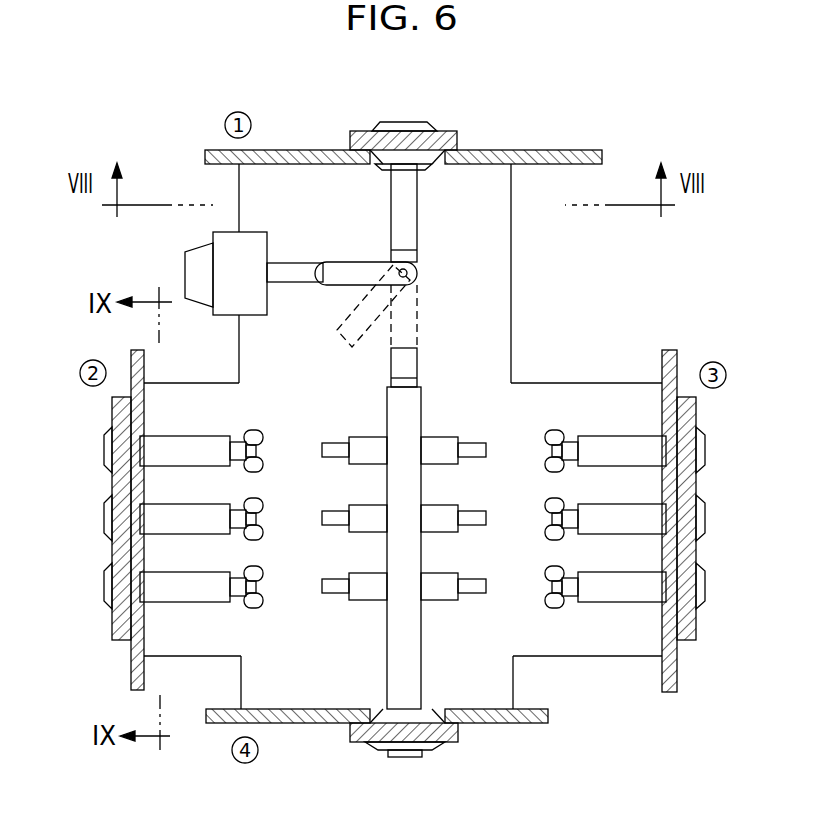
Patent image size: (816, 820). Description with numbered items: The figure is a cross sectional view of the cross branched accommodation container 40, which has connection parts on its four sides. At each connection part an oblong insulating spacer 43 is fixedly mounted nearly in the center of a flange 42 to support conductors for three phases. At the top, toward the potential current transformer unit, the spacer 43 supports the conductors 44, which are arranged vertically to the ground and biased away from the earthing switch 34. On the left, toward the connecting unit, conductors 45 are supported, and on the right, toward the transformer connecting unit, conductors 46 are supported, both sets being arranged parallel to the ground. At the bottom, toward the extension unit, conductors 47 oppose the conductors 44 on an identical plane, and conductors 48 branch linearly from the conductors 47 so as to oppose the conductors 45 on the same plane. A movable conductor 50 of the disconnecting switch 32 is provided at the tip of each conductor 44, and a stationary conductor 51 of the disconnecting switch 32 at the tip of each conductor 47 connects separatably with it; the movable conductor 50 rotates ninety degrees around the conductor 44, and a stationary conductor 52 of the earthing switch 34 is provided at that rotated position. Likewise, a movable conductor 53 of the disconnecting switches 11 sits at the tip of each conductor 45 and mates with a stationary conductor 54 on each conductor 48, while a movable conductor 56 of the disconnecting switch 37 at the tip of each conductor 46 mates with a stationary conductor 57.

The disconnecting switches 11 is at (295, 578).
The disconnecting switch 32 is at (405, 315).
The earthing switch 34 is at (252, 293).
The disconnecting switch 37 is at (517, 583).
The accommodation container 40 is at (511, 245).
The flange 42 is at (530, 150).
The oblong insulating spacer 43 is at (443, 132).
The conductors 44 is at (418, 192).
The conductors 45 is at (198, 445).
The conductors 46 is at (608, 460).
The conductors 47 is at (405, 665).
The conductors 48 is at (380, 453).
The movable conductor 50 is at (357, 270).
The stationary conductor 51 is at (407, 365).
The stationary conductor 52 is at (288, 270).
The movable conductor 53 is at (252, 432).
The stationary conductor 54 is at (334, 450).
The movable conductor 56 is at (556, 462).
The stationary conductor 57 is at (480, 455).